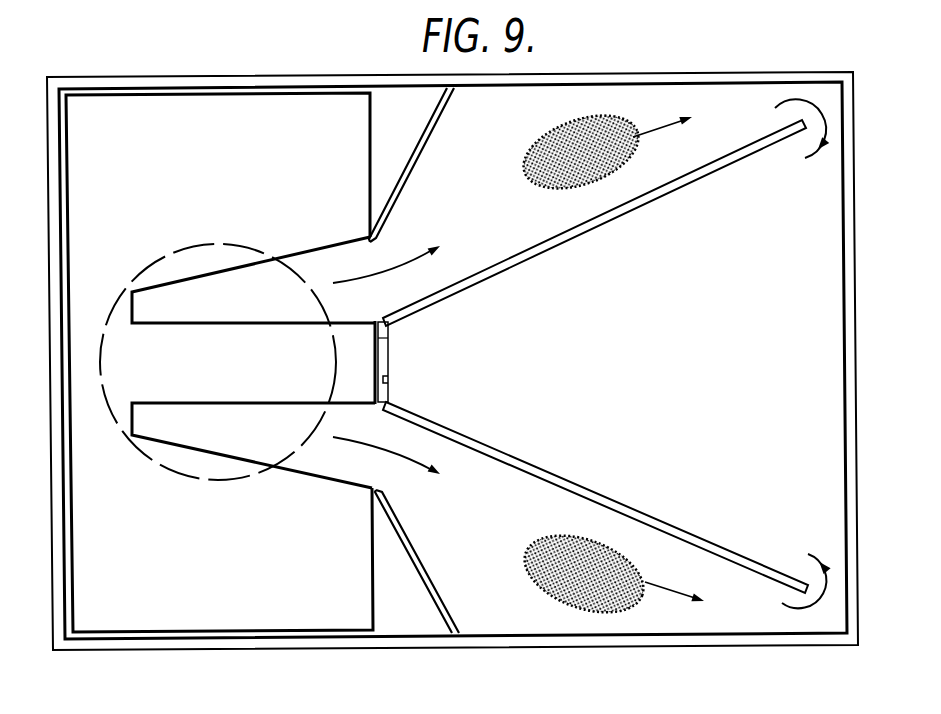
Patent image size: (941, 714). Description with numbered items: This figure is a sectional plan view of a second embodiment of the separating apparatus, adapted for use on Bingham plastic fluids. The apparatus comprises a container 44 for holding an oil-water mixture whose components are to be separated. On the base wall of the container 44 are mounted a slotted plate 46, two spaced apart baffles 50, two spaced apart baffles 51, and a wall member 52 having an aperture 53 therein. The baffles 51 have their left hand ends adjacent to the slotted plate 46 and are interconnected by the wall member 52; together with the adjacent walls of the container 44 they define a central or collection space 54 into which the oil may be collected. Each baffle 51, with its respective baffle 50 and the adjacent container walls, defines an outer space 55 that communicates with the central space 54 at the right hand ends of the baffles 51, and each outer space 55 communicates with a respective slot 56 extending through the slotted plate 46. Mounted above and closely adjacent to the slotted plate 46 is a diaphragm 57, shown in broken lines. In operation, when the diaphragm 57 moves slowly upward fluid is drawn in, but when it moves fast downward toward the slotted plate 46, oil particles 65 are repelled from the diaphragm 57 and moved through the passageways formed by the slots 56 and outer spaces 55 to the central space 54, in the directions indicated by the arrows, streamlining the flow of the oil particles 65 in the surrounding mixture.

The container 44 is at (860, 251).
The slotted plate 46 is at (243, 602).
The baffles 50 is at (425, 133).
The baffles 51 is at (577, 234).
The wall member 52 is at (389, 331).
The aperture 53 is at (389, 375).
The central space 54 is at (638, 373).
The outer space 55 is at (502, 232).
The slot 56 is at (320, 267).
The diaphragm 57 is at (193, 478).
The oil particles 65 is at (620, 152).